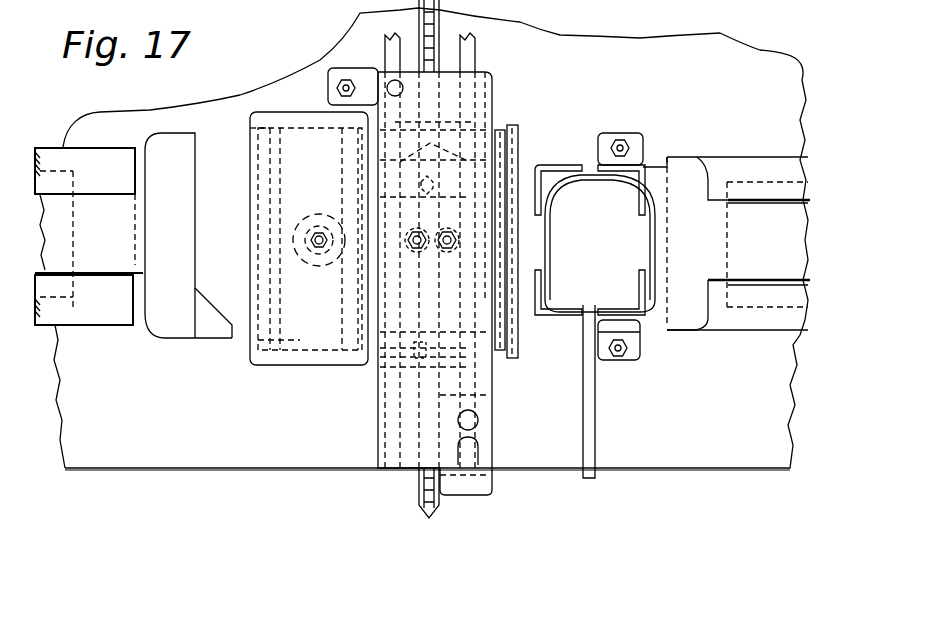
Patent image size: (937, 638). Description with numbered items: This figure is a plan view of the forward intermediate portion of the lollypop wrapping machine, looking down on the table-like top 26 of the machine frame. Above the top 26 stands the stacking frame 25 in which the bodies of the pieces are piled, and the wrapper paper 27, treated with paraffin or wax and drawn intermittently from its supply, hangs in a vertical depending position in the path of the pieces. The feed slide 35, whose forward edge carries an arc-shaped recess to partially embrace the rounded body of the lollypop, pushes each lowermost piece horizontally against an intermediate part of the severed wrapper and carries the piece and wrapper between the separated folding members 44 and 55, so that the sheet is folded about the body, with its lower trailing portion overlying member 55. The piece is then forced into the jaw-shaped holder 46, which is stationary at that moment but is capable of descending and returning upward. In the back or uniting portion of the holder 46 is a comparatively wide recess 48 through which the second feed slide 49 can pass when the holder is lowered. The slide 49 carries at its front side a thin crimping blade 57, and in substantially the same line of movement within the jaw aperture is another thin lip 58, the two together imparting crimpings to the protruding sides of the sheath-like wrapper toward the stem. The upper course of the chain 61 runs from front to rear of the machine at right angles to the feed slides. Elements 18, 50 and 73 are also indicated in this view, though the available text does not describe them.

The rail 18 is at (235, 237).
The stacking frame 25 is at (553, 167).
The table-like top 26 is at (424, 239).
The wrapper paper 27 is at (518, 343).
The feed slide 35 is at (725, 243).
The folding member 44 is at (392, 357).
The holder 46 is at (312, 365).
The recess 48 is at (262, 185).
The second feed slide 49 is at (188, 235).
The spring loop 50 is at (525, 166).
The folding member 55 is at (462, 366).
The crimping blade 57 is at (218, 330).
The lip 58 is at (440, 322).
The chain 61 is at (418, 490).
The yoke 73 is at (455, 143).